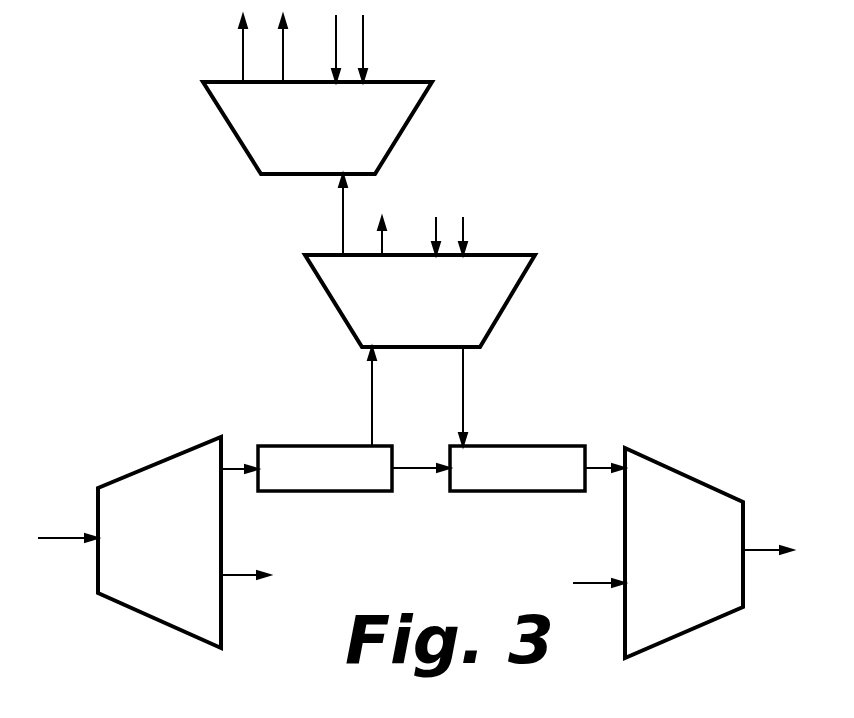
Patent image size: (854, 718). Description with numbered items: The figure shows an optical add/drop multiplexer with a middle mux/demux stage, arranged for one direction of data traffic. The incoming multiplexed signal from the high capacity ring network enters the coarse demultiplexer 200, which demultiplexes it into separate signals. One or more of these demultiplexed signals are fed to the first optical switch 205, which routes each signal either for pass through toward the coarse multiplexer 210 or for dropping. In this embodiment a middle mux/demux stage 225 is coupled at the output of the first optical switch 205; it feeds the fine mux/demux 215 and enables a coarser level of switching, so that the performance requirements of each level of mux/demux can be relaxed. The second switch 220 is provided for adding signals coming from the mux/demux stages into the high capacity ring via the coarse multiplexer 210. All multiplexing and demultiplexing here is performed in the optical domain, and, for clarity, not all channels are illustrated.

The coarse demultiplexer 200 is at (132, 483).
The first optical switch 205 is at (347, 482).
The coarse multiplexer 210 is at (707, 493).
The fine mux/demux 215 is at (420, 108).
The second switch 220 is at (524, 482).
The middle mux/demux stage 225 is at (503, 297).